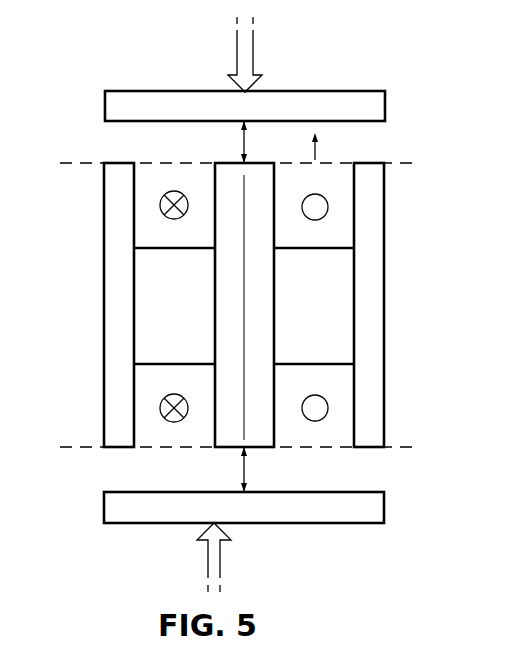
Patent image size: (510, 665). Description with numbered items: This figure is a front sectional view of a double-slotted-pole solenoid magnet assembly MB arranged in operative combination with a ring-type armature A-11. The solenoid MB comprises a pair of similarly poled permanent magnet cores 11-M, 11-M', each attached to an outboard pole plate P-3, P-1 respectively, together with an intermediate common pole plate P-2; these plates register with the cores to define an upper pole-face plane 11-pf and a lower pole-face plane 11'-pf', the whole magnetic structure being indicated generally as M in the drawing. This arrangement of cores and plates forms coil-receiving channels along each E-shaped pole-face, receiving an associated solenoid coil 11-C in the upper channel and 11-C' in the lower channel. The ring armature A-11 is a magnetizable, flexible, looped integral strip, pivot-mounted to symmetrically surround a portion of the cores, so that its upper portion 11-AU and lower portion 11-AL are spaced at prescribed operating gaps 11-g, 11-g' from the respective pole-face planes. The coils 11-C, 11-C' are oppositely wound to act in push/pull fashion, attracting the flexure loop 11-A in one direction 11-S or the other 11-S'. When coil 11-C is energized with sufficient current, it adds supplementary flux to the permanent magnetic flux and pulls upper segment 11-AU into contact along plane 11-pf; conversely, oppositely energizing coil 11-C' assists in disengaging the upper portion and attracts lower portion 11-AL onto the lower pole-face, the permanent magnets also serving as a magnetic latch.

The attraction direction 11-S is at (220, 51).
The opposite attraction direction 11-S' is at (187, 557).
The flexure loop 11-A is at (392, 100).
The upper armature portion 11-AU is at (152, 103).
The ring armature A-11 is at (400, 518).
The lower armature portion 11-AL is at (120, 510).
The upper operating gap 11-g is at (279, 110).
The lower operating gap 11-g' is at (275, 502).
The upper solenoid coil 11-C is at (268, 180).
The lower solenoid coil 11-C' is at (281, 399).
The upper pole-face plane 11-pf is at (416, 170).
The lower pole-face plane 11'-pf' is at (146, 468).
The permanent magnet core 11-M is at (314, 306).
The second permanent magnet core 11-M' is at (174, 306).
The magnet assembly M is at (318, 306).
The double-slotted-pole solenoid magnet assembly MB is at (390, 258).
The outboard pole plate P-1 is at (103, 393).
The intermediate common pole plate P-2 is at (216, 449).
The outboard pole plate P-3 is at (386, 330).